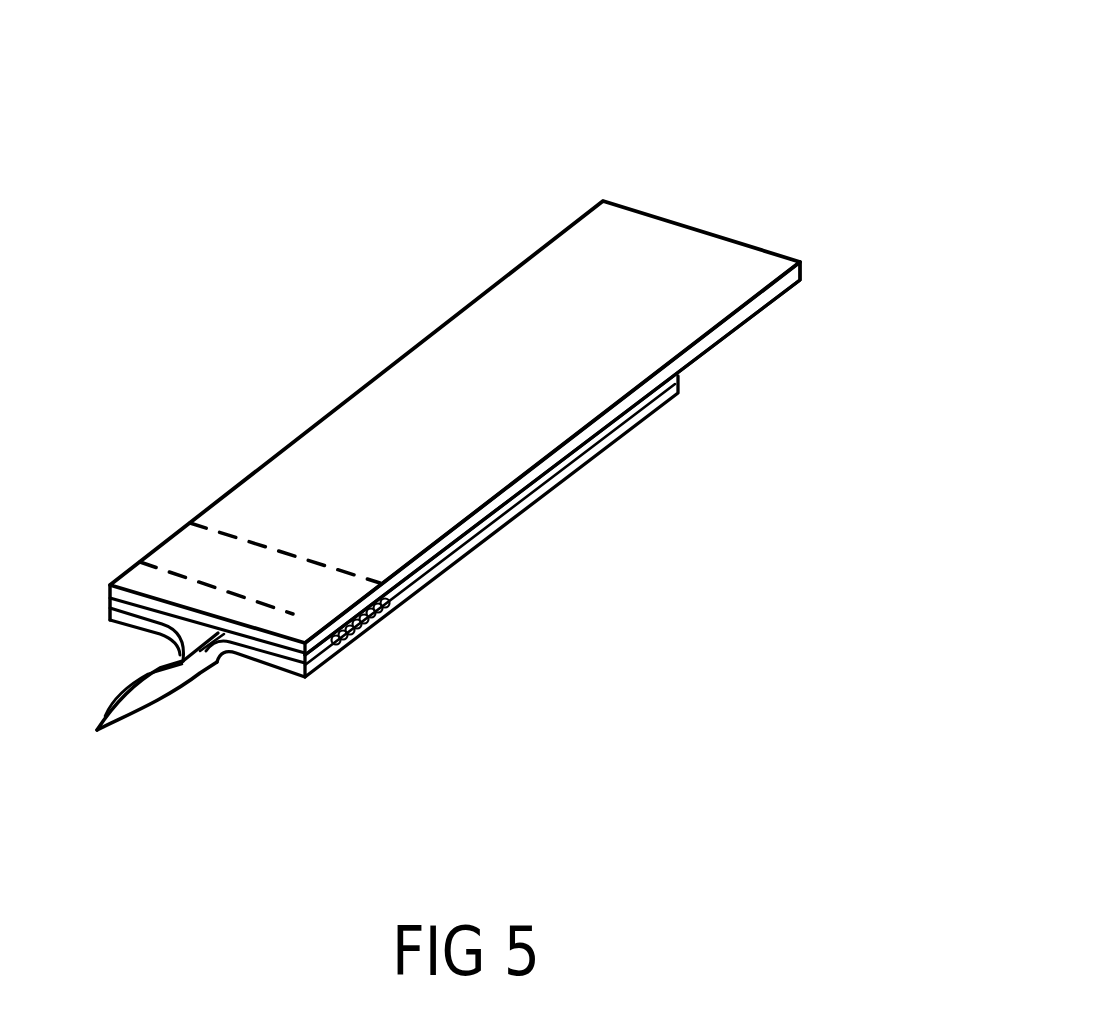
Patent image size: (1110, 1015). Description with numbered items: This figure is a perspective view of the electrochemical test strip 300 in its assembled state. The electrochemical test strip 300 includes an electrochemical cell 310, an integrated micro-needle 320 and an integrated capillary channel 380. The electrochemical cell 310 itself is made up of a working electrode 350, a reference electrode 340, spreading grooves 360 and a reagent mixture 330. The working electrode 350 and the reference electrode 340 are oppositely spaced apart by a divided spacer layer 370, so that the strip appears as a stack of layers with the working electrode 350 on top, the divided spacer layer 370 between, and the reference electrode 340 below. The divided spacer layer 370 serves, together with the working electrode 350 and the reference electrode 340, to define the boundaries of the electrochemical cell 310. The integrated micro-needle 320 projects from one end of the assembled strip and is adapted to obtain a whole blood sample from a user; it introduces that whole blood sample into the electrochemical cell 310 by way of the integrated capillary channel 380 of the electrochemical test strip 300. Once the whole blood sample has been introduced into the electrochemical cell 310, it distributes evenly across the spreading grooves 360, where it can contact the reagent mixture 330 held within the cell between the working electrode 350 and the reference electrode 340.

The electrochemical test strip 300 is at (696, 143).
The electrochemical cell 310 is at (212, 500).
The integrated micro-needle 320 is at (152, 710).
The reagent mixture 330 is at (298, 593).
The reference electrode 340 is at (583, 467).
The working electrode 350 is at (523, 262).
The spreading grooves 360 is at (383, 622).
The divided spacer layer 370 is at (723, 345).
The integrated capillary channel 380 is at (218, 660).